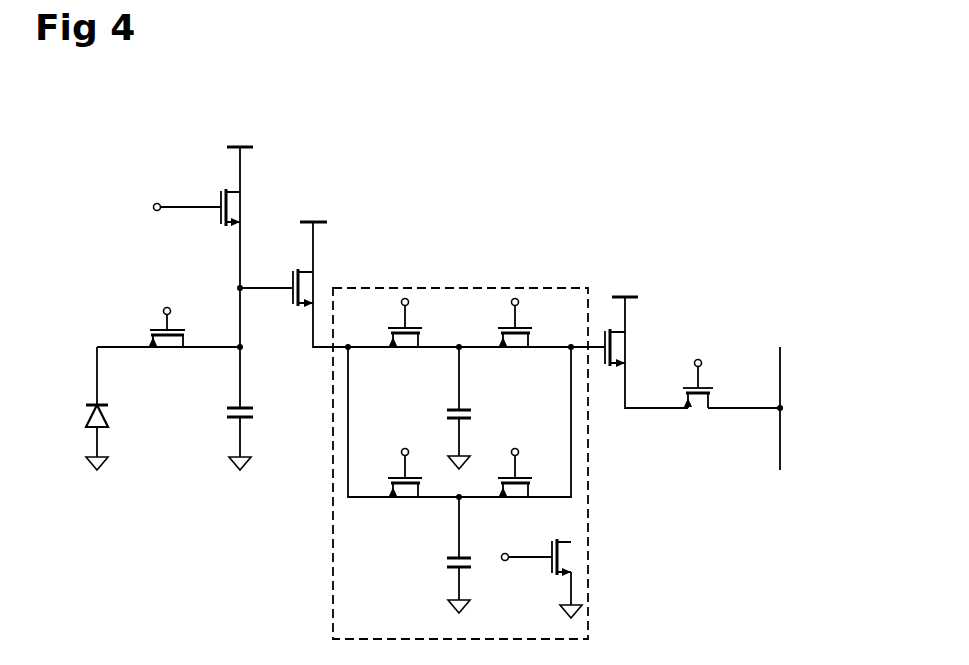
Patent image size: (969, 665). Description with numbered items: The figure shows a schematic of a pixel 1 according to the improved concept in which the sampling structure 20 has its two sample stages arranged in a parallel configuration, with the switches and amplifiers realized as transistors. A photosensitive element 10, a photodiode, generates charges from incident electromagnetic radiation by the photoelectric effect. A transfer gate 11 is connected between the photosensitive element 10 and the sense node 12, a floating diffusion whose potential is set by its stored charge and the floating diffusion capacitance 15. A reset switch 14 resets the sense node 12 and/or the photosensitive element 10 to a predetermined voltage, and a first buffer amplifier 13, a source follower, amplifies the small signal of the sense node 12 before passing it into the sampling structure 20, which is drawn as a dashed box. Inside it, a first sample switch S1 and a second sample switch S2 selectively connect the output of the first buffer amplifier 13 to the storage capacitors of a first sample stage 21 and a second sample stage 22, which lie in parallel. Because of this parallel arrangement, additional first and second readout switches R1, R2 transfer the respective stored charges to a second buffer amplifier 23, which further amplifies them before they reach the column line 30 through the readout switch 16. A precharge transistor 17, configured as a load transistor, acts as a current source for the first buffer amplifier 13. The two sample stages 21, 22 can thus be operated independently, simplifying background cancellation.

The pixel 1 is at (104, 157).
The photosensitive element 10 is at (112, 421).
The transfer gate 11 is at (151, 326).
The sense node 12 is at (245, 296).
The first buffer amplifier 13 is at (293, 268).
The reset switch 14 is at (216, 191).
The floating diffusion capacitance 15 is at (250, 421).
The readout switch 16 is at (688, 377).
The precharge transistor 17 is at (574, 556).
The sampling structure 20 is at (587, 466).
The first sample stage 21 is at (441, 412).
The second sample stage 22 is at (441, 562).
The second buffer amplifier 23 is at (609, 329).
The column line 30 is at (780, 345).
The first sample switch S1 is at (396, 321).
The second sample switch S2 is at (376, 478).
The first readout switch R1 is at (508, 321).
The second readout switch R2 is at (514, 442).